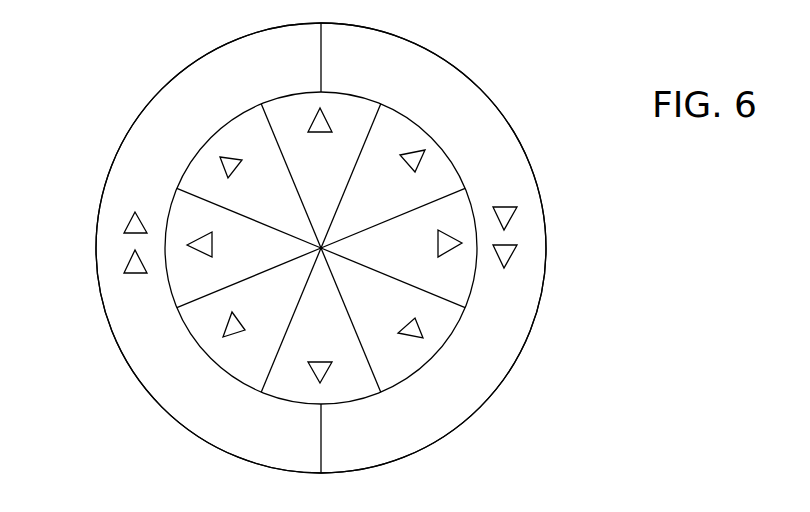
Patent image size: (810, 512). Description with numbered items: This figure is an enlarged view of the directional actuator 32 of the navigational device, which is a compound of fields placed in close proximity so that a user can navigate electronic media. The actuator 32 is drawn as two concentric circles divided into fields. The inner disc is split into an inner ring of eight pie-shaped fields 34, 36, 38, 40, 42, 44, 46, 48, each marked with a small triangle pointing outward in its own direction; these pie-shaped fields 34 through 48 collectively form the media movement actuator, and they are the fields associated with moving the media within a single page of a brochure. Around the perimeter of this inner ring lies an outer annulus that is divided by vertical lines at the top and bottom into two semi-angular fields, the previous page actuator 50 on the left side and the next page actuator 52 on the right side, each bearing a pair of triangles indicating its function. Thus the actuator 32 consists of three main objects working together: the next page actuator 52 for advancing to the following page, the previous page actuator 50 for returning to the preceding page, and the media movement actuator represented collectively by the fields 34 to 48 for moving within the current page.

The directional actuator 32 is at (128, 422).
The previous page actuator 50 is at (145, 110).
The next page actuator 52 is at (525, 158).
The pie-shaped field 34 is at (330, 317).
The pie-shaped field 36 is at (377, 297).
The pie-shaped field 38 is at (393, 251).
The pie-shaped field 40 is at (380, 207).
The pie-shaped field 42 is at (330, 177).
The pie-shaped field 44 is at (285, 212).
The pie-shaped field 46 is at (266, 254).
The pie-shaped field 48 is at (278, 299).